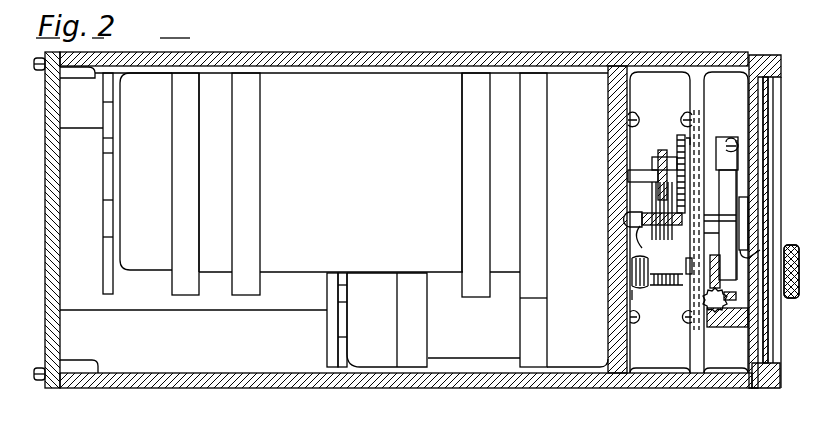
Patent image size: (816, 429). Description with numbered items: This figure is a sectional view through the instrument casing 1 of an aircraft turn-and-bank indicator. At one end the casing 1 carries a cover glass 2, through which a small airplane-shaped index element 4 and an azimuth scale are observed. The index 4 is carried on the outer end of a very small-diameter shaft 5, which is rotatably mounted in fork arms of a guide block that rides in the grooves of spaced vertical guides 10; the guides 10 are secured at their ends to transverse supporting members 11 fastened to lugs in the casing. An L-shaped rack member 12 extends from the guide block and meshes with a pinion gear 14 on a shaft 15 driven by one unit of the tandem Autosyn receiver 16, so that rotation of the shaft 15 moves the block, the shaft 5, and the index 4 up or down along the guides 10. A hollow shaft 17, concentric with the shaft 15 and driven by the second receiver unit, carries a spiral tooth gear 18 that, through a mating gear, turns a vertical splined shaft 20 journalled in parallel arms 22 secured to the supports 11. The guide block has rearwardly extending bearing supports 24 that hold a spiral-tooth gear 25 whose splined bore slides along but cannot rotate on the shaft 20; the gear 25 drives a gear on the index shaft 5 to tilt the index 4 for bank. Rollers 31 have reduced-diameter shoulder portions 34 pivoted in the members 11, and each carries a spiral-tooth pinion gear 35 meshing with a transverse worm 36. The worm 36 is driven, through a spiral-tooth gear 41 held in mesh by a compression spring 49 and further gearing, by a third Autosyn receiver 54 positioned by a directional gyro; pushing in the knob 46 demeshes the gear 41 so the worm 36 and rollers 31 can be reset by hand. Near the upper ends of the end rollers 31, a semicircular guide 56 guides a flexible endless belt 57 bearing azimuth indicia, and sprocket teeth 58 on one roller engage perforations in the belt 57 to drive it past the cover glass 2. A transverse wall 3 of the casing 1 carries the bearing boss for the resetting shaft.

The instrument casing 1 is at (192, 389).
The cover glass 2 is at (773, 345).
The transverse wall 3 is at (614, 113).
The index element 4 is at (745, 200).
The shaft 5 is at (746, 250).
The vertical guides 10 is at (690, 305).
The transverse supporting members 11 is at (732, 112).
The L-shaped rack member 12 is at (682, 136).
The pinion gear 14 is at (700, 193).
The shaft 15 is at (676, 148).
The electrical-motion-transmission receiver 16 is at (318, 268).
The hollow shaft 17 is at (632, 170).
The spiral tooth gear 18 is at (660, 158).
The vertical splined shaft 20 is at (652, 240).
The parallel arms 22 is at (645, 288).
The bearing supports 24 is at (640, 240).
The spiral-tooth gear 25 is at (632, 222).
The rollers 31 is at (728, 238).
The reduced-diameter shoulder portions 34 is at (730, 288).
The spiral-tooth pinion gear 35 is at (736, 298).
The worm 36 is at (708, 327).
The spiral-tooth gear 41 is at (689, 275).
The knob 46 is at (780, 300).
The compression spring 49 is at (638, 322).
The Autosyn receiver 54 is at (450, 345).
The semicircular guide 56 is at (730, 155).
The endless belt 57 is at (748, 170).
The sprocket teeth 58 is at (736, 146).